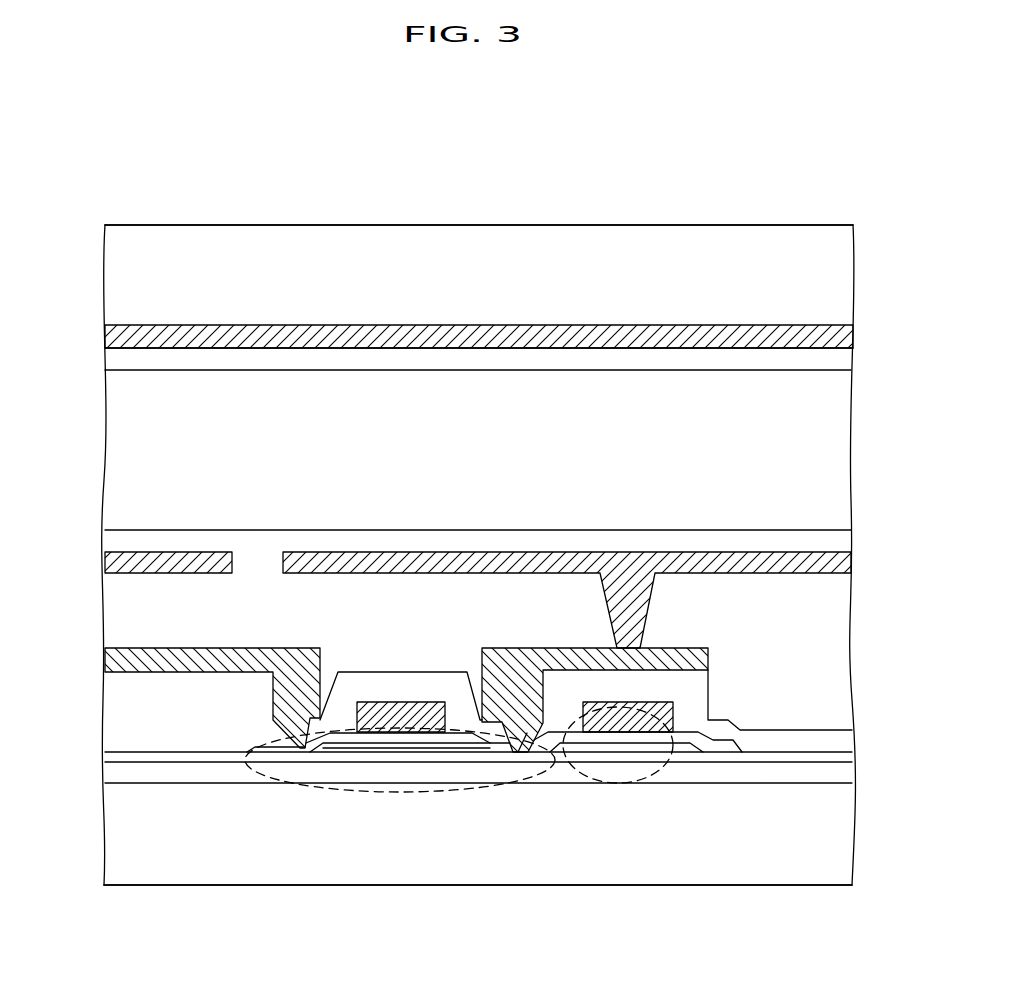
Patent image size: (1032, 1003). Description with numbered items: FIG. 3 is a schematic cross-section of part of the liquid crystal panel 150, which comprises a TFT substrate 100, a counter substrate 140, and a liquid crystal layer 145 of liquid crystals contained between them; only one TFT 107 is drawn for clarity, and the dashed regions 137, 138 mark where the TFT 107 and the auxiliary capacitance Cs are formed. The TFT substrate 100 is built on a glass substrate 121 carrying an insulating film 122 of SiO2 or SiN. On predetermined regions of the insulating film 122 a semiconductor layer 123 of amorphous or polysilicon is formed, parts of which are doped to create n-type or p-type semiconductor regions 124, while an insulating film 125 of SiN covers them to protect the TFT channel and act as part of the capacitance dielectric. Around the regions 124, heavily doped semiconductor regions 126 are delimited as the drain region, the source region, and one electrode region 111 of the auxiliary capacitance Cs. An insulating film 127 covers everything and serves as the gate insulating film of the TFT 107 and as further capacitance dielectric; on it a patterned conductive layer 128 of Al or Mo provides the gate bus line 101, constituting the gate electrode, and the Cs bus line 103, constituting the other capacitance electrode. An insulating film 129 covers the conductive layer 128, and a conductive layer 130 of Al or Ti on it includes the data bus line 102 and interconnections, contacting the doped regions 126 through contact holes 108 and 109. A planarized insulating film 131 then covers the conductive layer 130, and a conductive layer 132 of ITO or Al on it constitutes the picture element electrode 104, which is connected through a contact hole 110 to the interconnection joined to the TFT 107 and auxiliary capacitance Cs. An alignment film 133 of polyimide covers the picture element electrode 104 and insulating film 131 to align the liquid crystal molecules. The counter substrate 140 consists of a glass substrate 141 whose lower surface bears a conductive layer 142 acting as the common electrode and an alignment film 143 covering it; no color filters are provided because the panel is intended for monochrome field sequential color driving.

The liquid crystal panel 150 is at (603, 153).
The counter substrate 140 is at (95, 226).
The glass substrate 141 is at (845, 277).
The conductive layer 142 is at (838, 333).
The alignment film 143 is at (843, 355).
The liquid crystal layer 145 is at (115, 448).
The TFT substrate 100 is at (93, 531).
The alignment film 133 is at (840, 532).
The conductive layer 132 is at (513, 600).
The picture element electrode 104 is at (513, 600).
The contact hole 110 is at (642, 595).
The planarized insulating film 131 is at (836, 654).
The conductive layer 130 is at (507, 676).
The data bus line 102 is at (247, 650).
The insulating film 129 is at (838, 740).
The conductive layer 128 is at (595, 676).
The gate bus line 101 is at (395, 710).
The Cs bus line 103 is at (673, 713).
The insulating film 127 is at (838, 755).
The semiconductor regions 126 is at (438, 865).
The electrode region 111 is at (283, 750).
The insulating film 125 is at (440, 748).
The semiconductor regions 124 is at (335, 748).
The semiconductor layer 123 is at (388, 748).
The insulating film 122 is at (838, 772).
The glass substrate 121 is at (835, 845).
The contact hole 108 is at (298, 750).
The contact hole 109 is at (525, 762).
The TFT 107 is at (410, 802).
The region 137 is at (197, 752).
The region 138 is at (128, 718).
The auxiliary capacitance Cs is at (650, 790).